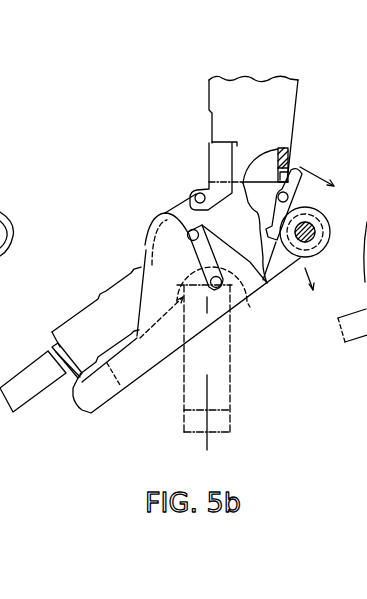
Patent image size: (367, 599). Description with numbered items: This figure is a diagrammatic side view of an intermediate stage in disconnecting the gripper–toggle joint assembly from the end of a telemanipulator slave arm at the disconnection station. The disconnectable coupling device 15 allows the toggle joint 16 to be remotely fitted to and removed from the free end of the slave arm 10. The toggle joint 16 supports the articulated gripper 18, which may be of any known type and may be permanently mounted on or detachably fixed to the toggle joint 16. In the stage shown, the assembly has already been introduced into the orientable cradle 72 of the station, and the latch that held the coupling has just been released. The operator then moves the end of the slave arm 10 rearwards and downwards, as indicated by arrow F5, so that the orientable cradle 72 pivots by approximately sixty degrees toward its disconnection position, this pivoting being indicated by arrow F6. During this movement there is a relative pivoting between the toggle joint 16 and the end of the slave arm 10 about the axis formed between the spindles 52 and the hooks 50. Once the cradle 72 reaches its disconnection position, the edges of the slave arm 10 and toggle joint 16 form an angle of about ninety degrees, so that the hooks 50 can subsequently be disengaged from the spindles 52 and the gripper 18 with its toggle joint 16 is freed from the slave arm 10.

The slave arm 10 is at (303, 100).
The disconnectable coupling device 15 is at (167, 160).
The toggle joint 16 is at (172, 209).
The articulated gripper 18 is at (83, 305).
The hooks 50 is at (212, 153).
The spindles 52 is at (195, 195).
The orientable cradle 72 is at (142, 377).
The arrow F5 is at (306, 170).
The arrow F6 is at (305, 268).